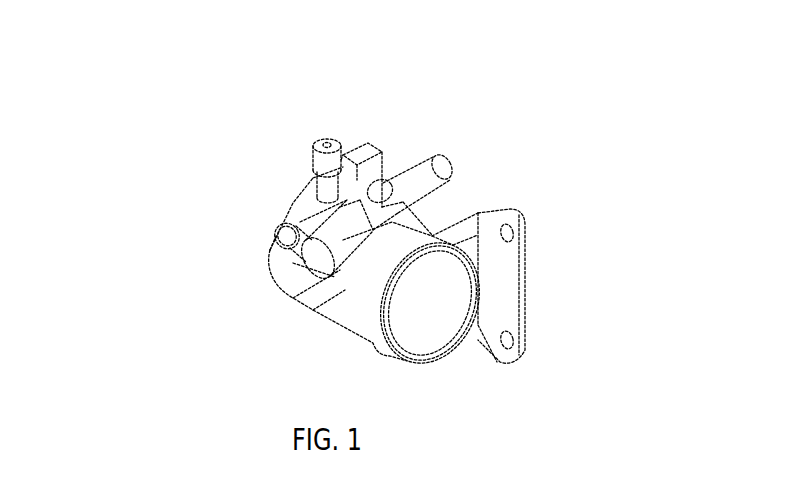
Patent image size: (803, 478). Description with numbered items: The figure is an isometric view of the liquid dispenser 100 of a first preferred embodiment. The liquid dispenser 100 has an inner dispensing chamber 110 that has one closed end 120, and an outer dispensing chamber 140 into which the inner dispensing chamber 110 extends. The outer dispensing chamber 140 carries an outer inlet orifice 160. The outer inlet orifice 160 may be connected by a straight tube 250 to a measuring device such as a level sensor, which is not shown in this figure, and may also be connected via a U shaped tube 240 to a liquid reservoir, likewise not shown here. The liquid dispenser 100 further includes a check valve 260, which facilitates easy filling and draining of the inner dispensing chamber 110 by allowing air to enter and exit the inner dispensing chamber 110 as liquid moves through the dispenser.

The liquid dispenser 100 is at (516, 435).
The inner dispensing chamber 110 is at (440, 305).
The closed end 120 is at (599, 286).
The outer dispensing chamber 140 is at (337, 305).
The outer inlet orifice 160 is at (388, 227).
The U shaped tube 240 is at (327, 235).
The straight tube 250 is at (435, 163).
The check valve 260 is at (322, 155).